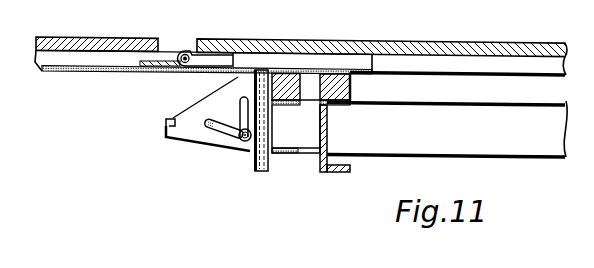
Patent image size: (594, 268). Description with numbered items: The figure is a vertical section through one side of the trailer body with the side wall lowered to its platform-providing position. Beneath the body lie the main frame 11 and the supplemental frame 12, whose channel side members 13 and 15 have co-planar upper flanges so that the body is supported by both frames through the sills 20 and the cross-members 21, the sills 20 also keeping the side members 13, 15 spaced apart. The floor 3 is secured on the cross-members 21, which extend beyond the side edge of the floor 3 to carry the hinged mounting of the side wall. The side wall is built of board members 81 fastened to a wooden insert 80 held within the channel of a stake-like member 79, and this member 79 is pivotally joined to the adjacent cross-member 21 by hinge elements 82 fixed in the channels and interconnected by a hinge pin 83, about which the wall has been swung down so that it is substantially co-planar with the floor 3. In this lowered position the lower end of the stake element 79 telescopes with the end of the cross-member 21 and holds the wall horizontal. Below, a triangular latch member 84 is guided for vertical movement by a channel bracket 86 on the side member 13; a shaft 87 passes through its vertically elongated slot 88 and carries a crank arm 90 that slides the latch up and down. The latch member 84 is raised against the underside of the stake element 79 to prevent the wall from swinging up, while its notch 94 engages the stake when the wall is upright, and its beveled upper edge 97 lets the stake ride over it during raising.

The bottom wall or floor 3 is at (395, 41).
The main frame 11 is at (311, 156).
The supplemental frame 12 is at (332, 173).
The side member 13 is at (285, 155).
The side member 15 is at (328, 135).
The sill 20 is at (332, 76).
The cross-member 21 is at (453, 63).
The stake-like member 79 is at (62, 74).
The wooden insert 80 is at (97, 60).
The board member 81 is at (97, 37).
The hinge element 82 is at (203, 57).
The hinge pin 83 is at (183, 55).
The latch member 84 is at (198, 133).
The channel bracket 86 is at (258, 172).
The shaft 87 is at (240, 140).
The vertically elongated slot 88 is at (240, 104).
The crank arm 90 is at (220, 132).
The notch 94 is at (166, 119).
The upper edge 97 is at (200, 101).